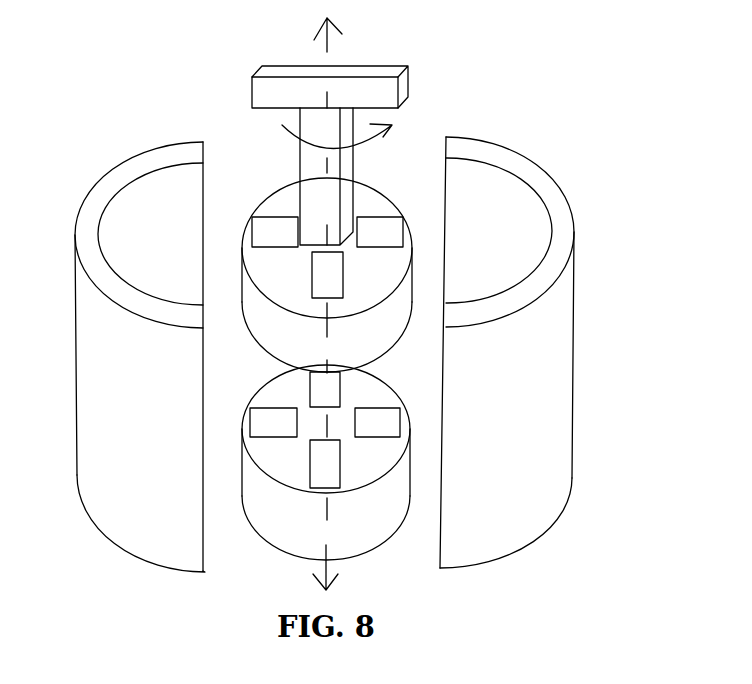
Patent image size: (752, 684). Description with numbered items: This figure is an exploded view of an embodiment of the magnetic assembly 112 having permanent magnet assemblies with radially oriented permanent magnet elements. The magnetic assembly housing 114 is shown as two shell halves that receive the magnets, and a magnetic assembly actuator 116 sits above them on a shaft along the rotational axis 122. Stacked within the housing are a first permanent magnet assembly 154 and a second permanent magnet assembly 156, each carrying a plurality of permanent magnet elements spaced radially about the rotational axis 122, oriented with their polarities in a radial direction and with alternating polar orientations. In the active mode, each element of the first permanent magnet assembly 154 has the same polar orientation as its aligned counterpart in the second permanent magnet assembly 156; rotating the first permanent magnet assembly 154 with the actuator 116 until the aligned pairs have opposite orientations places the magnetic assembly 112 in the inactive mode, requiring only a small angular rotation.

The magnetic assembly 112 is at (552, 152).
The magnetic assembly housing 114 is at (88, 217).
The magnetic assembly actuator 116 is at (265, 88).
The rotational axis 122 is at (328, 565).
The first permanent magnet assembly 154 is at (330, 254).
The second permanent magnet assembly 156 is at (329, 474).